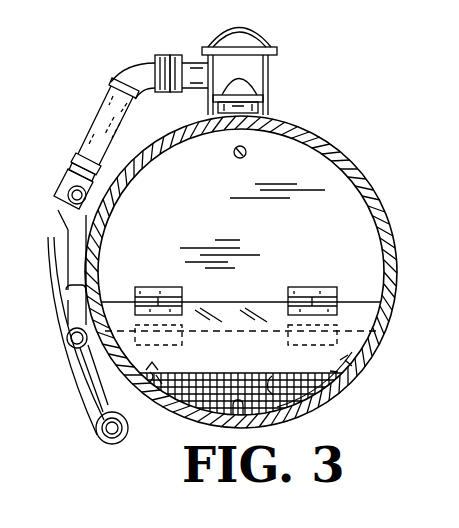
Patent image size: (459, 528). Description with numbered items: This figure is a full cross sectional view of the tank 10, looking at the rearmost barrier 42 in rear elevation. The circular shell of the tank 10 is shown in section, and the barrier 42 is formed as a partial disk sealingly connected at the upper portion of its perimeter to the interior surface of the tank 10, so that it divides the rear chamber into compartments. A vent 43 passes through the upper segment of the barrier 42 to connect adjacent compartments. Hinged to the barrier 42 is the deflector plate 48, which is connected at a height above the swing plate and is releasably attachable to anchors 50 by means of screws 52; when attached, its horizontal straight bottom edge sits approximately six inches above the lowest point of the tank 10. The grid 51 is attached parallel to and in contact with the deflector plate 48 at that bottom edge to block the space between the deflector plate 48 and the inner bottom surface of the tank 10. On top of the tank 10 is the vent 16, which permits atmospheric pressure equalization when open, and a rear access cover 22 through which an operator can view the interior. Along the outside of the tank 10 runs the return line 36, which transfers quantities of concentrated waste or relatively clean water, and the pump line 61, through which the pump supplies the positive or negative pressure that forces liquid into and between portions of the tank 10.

The tank 10 is at (398, 257).
The vent 16 is at (262, 41).
The rear access cover 22 is at (250, 80).
The return line 36 is at (68, 336).
The barrier 42 is at (244, 233).
The vent 43 is at (233, 156).
The deflector plate 48 is at (250, 361).
The anchor 50 is at (355, 357).
The grid 51 is at (287, 372).
The screw 52 is at (160, 370).
The pump line 61 is at (97, 428).